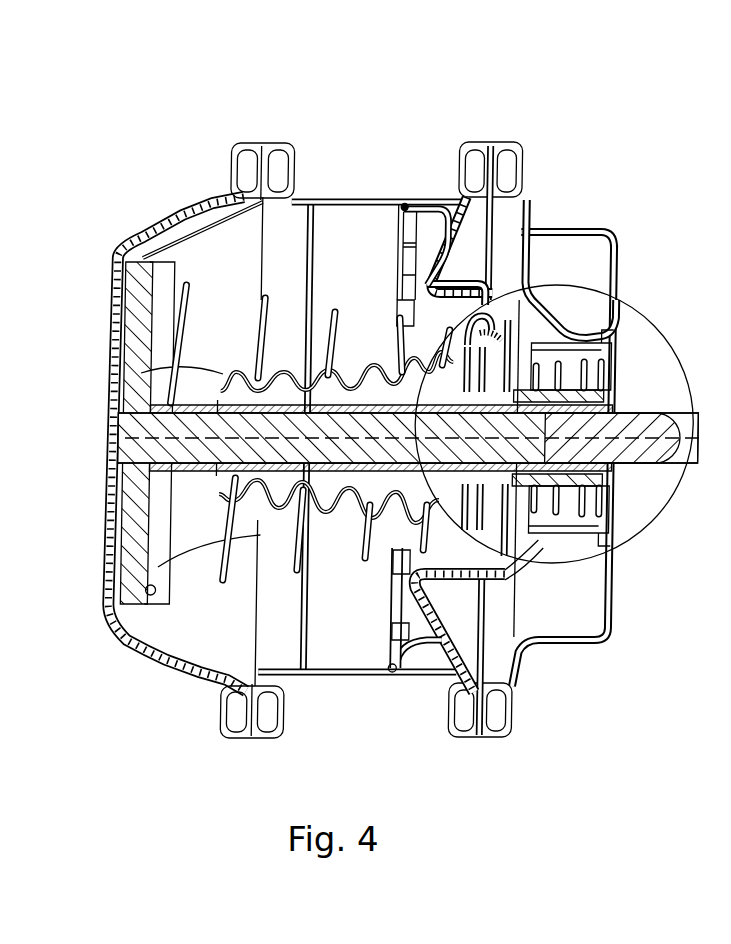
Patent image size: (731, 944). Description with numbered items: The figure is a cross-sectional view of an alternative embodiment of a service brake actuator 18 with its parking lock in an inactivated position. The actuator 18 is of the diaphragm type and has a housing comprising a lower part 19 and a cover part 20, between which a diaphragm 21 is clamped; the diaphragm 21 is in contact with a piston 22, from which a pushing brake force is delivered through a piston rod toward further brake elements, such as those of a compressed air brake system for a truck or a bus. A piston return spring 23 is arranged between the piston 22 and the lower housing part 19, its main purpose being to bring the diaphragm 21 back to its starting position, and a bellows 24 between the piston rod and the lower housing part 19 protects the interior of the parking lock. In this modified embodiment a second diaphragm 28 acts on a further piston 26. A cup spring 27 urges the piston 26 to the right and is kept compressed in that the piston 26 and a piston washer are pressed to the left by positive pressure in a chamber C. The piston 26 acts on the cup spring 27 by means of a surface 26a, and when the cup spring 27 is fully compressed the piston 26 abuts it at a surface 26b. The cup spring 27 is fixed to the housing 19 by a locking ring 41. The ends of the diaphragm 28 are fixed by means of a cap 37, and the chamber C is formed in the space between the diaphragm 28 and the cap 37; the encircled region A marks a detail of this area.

The service brake actuator 18 is at (257, 92).
The lower housing part 19 is at (321, 197).
The cover part 20 is at (176, 214).
The diaphragm 21 is at (211, 196).
The piston 22 is at (120, 440).
The piston return spring 23 is at (118, 615).
The bellows 24 is at (127, 375).
The piston 26 is at (434, 183).
The surface 26a is at (411, 205).
The surface 26b is at (402, 672).
The cup spring 27 is at (405, 612).
The diaphragm 28 is at (526, 207).
The cap 37 is at (550, 230).
The locking ring 41 is at (401, 204).
The detail region A is at (647, 314).
The chamber C is at (584, 258).